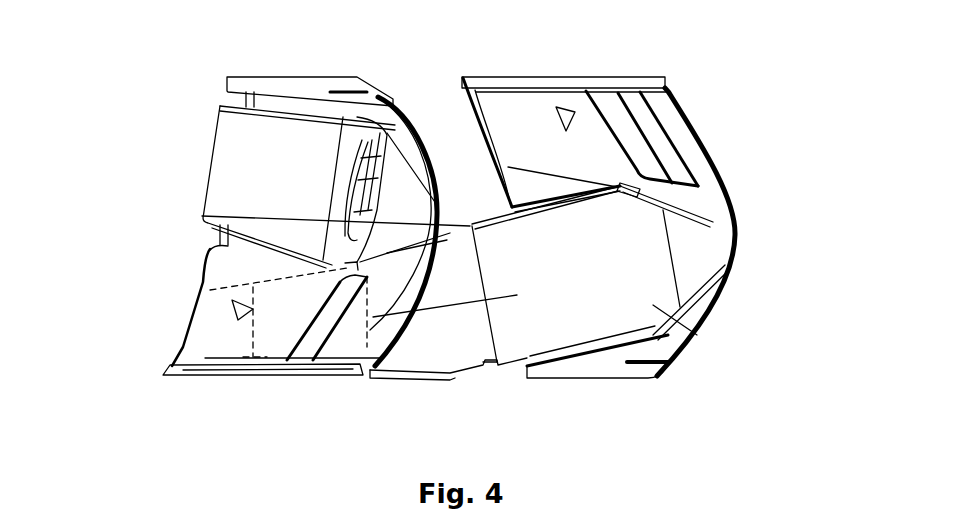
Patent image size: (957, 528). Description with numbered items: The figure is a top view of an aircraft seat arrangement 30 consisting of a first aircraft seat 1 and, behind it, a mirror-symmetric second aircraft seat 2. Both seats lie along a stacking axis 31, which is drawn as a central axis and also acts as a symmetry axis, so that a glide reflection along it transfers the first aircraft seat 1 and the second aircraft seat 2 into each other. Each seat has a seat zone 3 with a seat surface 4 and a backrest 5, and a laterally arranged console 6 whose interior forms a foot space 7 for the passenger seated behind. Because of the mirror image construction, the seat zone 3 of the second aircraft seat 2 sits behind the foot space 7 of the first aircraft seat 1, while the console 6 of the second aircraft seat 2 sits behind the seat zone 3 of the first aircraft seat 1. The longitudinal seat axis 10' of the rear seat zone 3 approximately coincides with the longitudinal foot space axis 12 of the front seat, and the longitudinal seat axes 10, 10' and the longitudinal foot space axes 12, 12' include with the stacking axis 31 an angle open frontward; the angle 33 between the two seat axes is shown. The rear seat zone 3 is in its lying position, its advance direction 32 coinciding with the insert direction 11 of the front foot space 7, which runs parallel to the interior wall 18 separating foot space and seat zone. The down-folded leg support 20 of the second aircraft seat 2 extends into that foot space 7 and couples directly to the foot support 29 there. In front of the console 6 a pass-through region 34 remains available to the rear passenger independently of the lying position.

The first aircraft seat 1 is at (258, 58).
The second aircraft seat 2 is at (599, 71).
The seat zone 3 is at (298, 157).
The seat surface 4 is at (237, 133).
The backrest 5 is at (358, 137).
The console 6 is at (327, 373).
The foot space 7 is at (563, 106).
The longitudinal seat axis 10 is at (307, 231).
The longitudinal seat axis 10' is at (712, 232).
The insert direction 11 is at (432, 279).
The longitudinal foot space axis 12 is at (303, 326).
The longitudinal foot space axis 12' is at (634, 214).
The interior wall 18 is at (285, 280).
The leg support 20 is at (277, 343).
The foot support 29 is at (217, 350).
The aircraft seat arrangement 30 is at (758, 56).
The stacking axis 31 is at (120, 232).
The advance direction 32 is at (546, 231).
The angle 33 is at (647, 252).
The pass-through region 34 is at (447, 135).